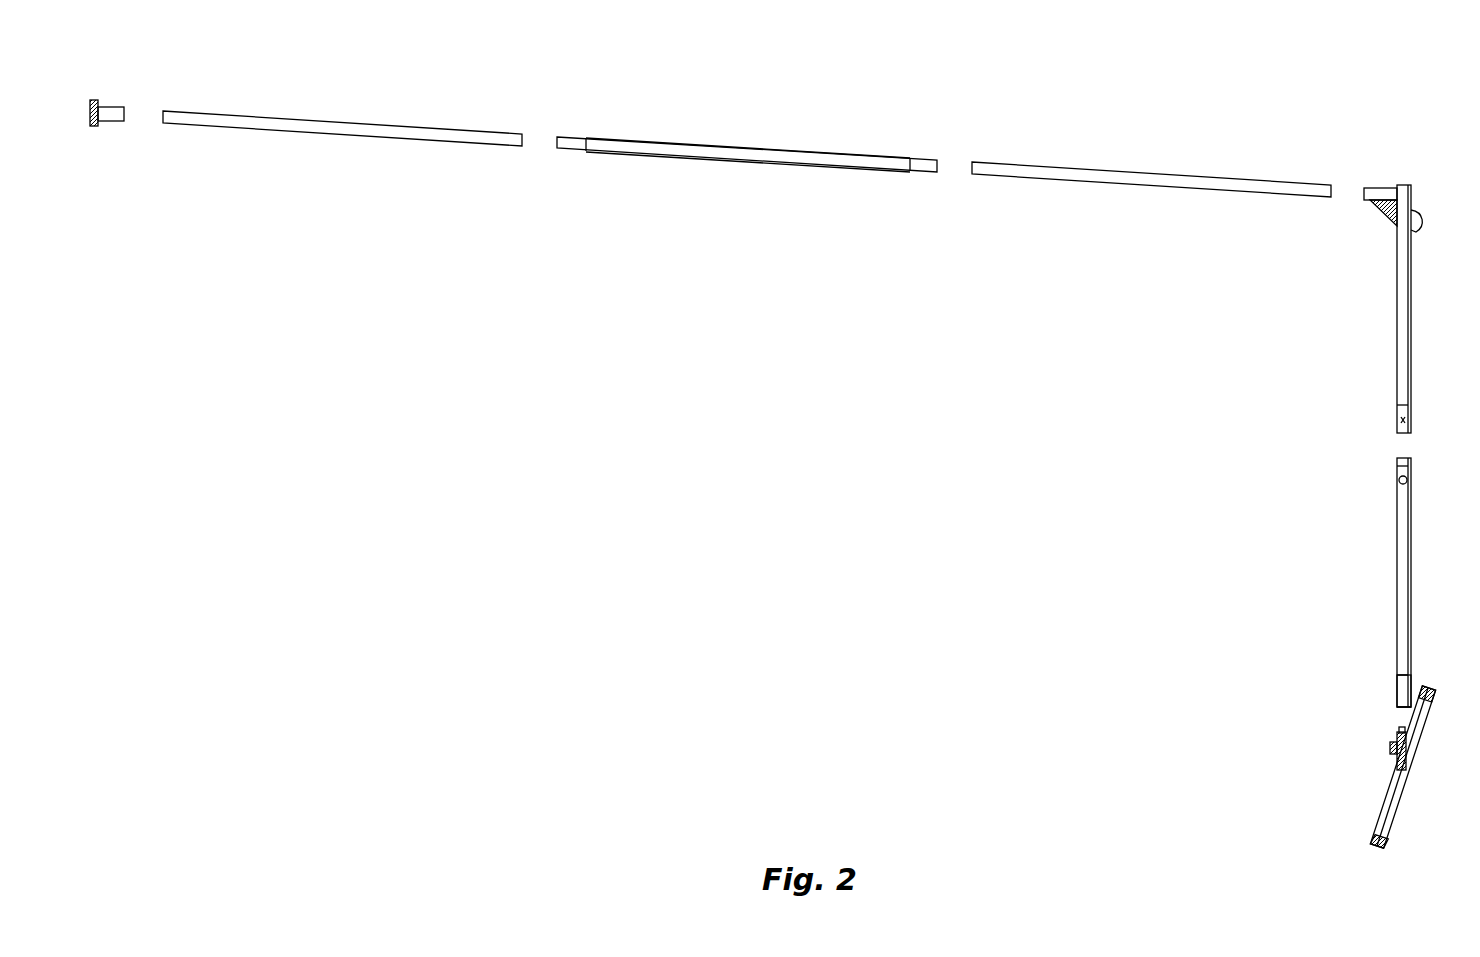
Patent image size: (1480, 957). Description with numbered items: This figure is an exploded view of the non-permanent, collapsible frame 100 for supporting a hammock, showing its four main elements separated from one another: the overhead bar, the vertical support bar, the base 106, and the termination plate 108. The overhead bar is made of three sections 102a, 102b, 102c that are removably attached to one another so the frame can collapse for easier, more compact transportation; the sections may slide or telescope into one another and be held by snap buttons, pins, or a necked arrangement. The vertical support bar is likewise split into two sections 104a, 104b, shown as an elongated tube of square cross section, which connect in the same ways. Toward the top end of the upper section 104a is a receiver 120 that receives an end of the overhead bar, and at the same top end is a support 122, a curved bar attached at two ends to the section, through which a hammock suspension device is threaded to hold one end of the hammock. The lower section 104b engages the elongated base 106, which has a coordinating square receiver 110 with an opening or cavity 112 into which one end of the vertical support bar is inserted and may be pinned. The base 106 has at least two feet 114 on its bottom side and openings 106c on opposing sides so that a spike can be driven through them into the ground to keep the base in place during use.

The non-permanent, collapsible frame 100 is at (1316, 104).
The termination plate 108 is at (112, 106).
The first section of overhead bar 102a is at (347, 122).
The second section of overhead bar 102b is at (742, 147).
The third section of overhead bar 102c is at (1162, 168).
The receiver 120 is at (1386, 196).
The support 122 is at (1418, 218).
The first section of vertical support bar 104a is at (1396, 320).
The second section of vertical support bar 104b is at (1396, 568).
The openings 106c is at (1410, 692).
The base 106 is at (1435, 713).
The feet 114 is at (1437, 695).
The square receiver 110 is at (1398, 736).
The opening or cavity 112 is at (1401, 729).